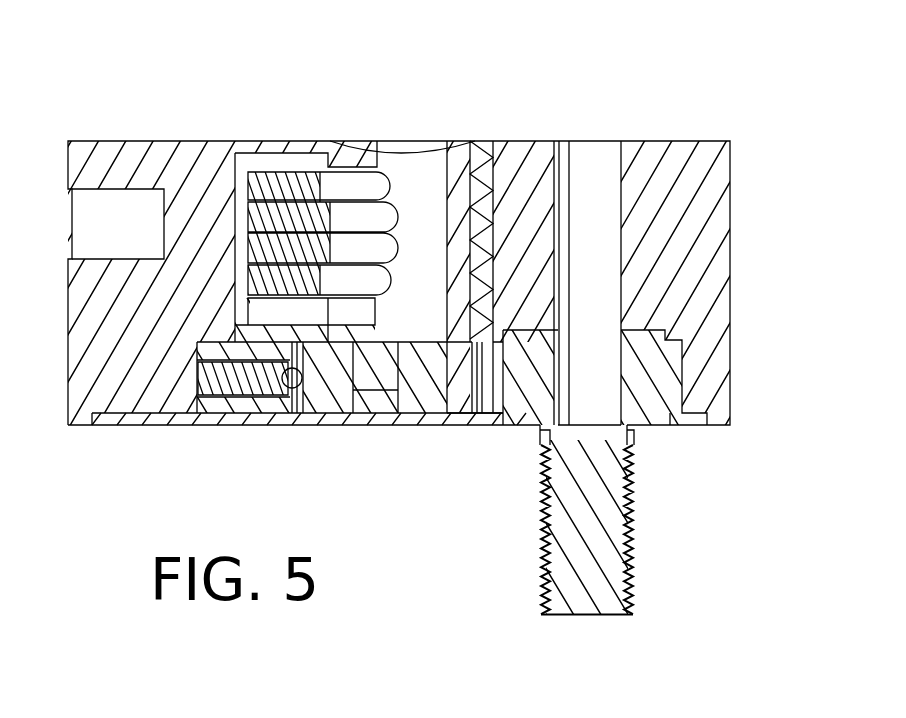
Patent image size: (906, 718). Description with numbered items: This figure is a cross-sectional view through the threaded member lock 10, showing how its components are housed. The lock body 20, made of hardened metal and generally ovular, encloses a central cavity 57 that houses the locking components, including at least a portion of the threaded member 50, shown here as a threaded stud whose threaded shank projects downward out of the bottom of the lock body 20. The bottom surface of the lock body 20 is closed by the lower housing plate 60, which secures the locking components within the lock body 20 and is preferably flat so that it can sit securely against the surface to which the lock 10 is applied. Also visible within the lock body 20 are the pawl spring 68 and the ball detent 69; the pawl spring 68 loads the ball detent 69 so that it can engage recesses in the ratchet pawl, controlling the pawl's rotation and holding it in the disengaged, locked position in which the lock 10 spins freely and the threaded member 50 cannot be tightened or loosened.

The lock 10 is at (178, 120).
The lock body 20 is at (712, 326).
The threaded member 50 is at (633, 585).
The central cavity 57 is at (413, 188).
The lower housing plate 60 is at (155, 417).
The pawl spring 68 is at (223, 407).
The ball detent 69 is at (300, 386).